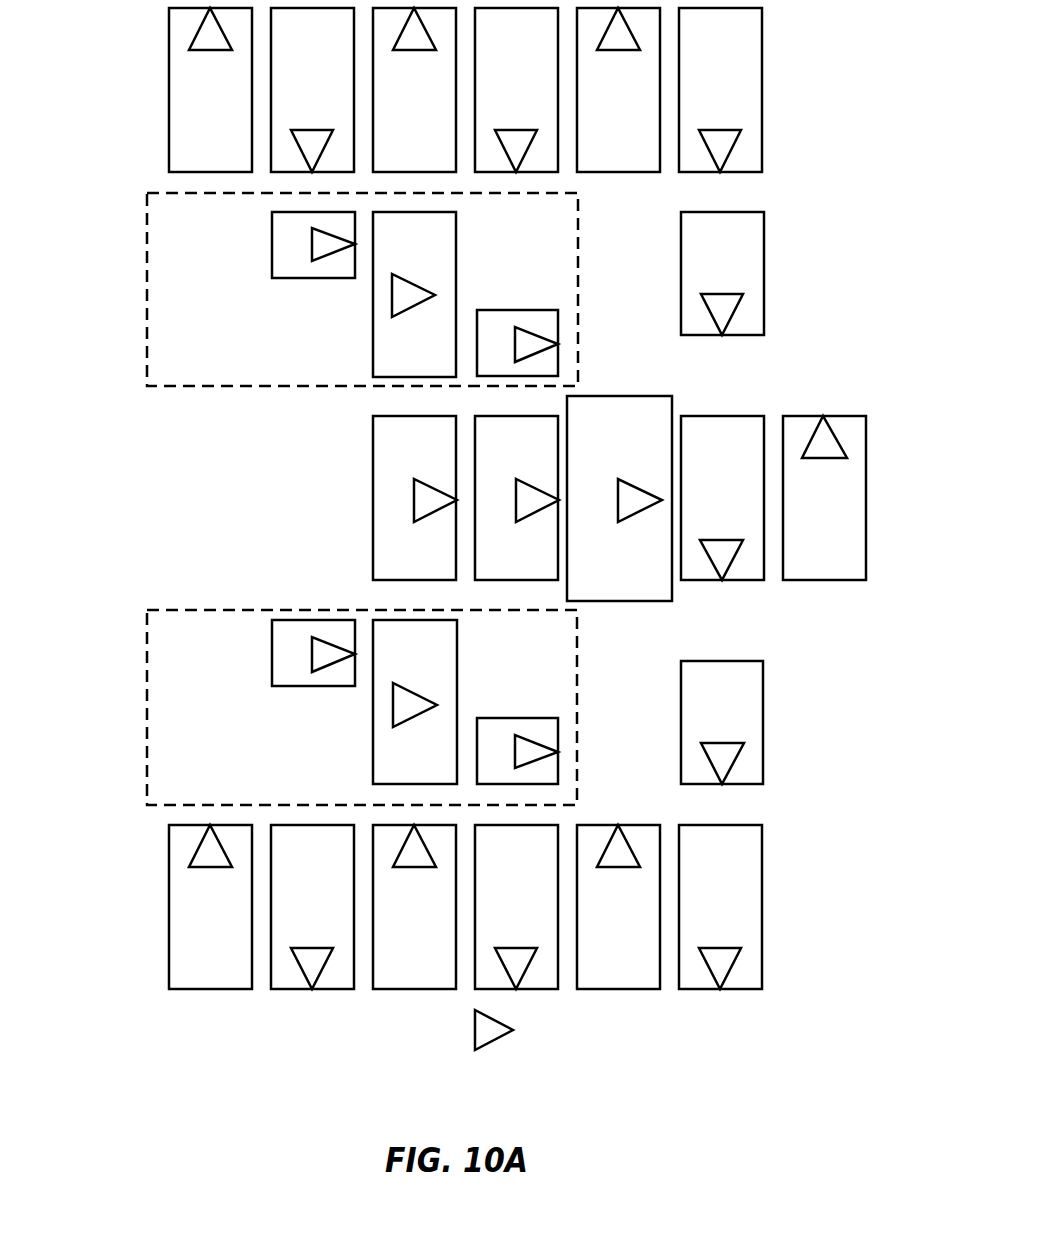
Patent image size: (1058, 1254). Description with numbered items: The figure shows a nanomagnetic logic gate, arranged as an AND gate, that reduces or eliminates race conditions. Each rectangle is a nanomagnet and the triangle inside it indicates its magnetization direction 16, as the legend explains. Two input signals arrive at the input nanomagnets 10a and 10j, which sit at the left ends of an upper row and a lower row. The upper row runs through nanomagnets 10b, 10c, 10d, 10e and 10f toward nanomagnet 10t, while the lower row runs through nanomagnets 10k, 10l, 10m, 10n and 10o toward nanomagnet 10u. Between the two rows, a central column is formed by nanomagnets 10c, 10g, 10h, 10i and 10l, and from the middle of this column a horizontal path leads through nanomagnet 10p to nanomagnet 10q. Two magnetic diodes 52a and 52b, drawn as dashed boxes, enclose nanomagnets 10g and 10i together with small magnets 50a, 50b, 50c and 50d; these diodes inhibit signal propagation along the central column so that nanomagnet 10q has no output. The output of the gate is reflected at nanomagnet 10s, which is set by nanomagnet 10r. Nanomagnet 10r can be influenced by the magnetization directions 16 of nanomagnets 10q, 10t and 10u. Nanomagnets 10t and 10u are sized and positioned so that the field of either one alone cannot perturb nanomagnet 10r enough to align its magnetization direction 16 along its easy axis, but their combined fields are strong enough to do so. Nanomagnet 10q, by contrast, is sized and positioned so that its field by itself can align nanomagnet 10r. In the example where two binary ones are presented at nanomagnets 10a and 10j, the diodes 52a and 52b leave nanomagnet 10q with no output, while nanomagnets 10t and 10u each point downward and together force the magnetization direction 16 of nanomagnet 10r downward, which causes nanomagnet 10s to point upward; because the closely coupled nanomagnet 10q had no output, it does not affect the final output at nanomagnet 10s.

The nanomagnet 10a is at (210, 90).
The nanomagnet 10b is at (312, 90).
The nanomagnet 10c is at (414, 90).
The nanomagnet 10d is at (516, 90).
The nanomagnet 10e is at (618, 90).
The nanomagnet 10f is at (720, 90).
The nanomagnet 10g is at (414, 294).
The nanomagnet 10h is at (415, 498).
The nanomagnet 10i is at (415, 702).
The nanomagnet 10j is at (210, 907).
The nanomagnet 10k is at (312, 907).
The nanomagnet 10l is at (414, 907).
The nanomagnet 10m is at (516, 907).
The nanomagnet 10n is at (618, 907).
The nanomagnet 10o is at (720, 907).
The nanomagnet 10p is at (517, 498).
The nanomagnet 10q is at (619, 498).
The nanomagnet 10r is at (722, 498).
The nanomagnet 10s is at (824, 498).
The nanomagnet 10t is at (722, 273).
The nanomagnet 10u is at (722, 722).
The magnet 50a is at (272, 242).
The magnet 50b is at (558, 328).
The magnet 50c is at (272, 660).
The magnet 50d is at (558, 735).
The magnetic diode 52a is at (147, 235).
The magnetic diode 52b is at (147, 653).
The magnetization direction 16 is at (622, 1039).